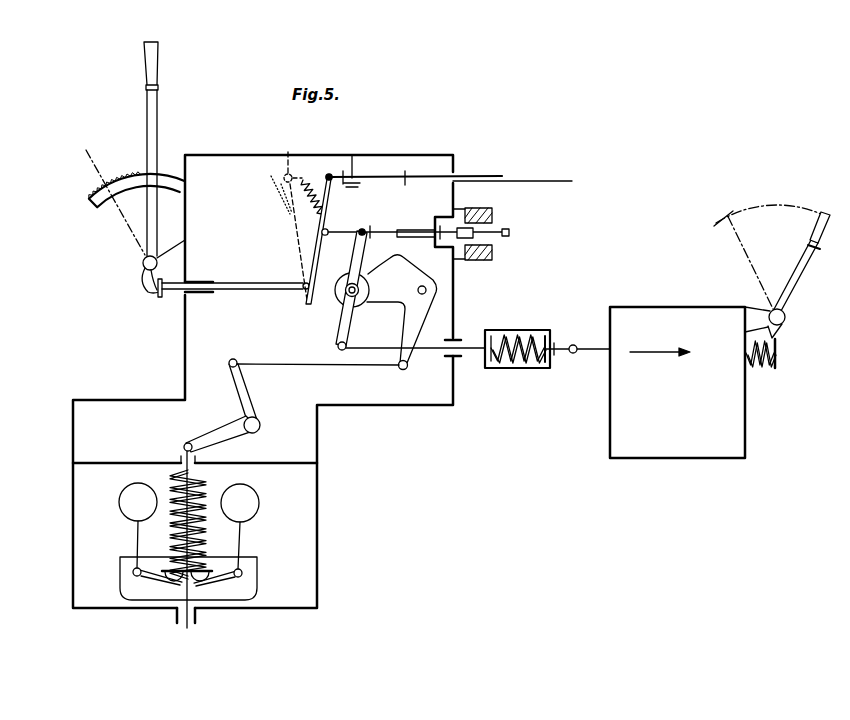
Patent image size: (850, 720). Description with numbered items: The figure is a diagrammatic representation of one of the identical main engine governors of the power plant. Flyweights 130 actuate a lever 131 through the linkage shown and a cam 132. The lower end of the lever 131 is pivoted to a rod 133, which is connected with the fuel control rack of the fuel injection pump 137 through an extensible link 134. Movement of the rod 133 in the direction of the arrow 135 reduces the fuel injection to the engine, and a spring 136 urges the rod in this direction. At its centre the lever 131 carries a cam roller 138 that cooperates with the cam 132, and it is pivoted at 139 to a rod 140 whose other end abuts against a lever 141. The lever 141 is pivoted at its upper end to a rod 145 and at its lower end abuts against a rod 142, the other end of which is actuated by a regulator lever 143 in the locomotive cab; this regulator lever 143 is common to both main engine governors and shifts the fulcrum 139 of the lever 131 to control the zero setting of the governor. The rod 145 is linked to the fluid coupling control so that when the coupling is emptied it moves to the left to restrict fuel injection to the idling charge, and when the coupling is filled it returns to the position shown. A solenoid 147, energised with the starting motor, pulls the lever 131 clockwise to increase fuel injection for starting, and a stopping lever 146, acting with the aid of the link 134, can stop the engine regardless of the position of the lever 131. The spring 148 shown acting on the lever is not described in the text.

The flyweights 130 is at (119, 493).
The lever 131 is at (337, 333).
The cam 132 is at (385, 298).
The rod 133 is at (474, 346).
The extensible link 134 is at (514, 329).
The arrow 135 is at (650, 354).
The spring 136 is at (766, 371).
The fuel injection pump 137 is at (677, 382).
The cam roller 138 is at (338, 298).
The pivot (fulcrum) 139 is at (363, 228).
The rod 140 is at (340, 229).
The lever 141 is at (321, 238).
The rod 142 is at (245, 282).
The regulator lever 143 is at (154, 78).
The rod 145 is at (410, 184).
The stopping lever 146 is at (800, 262).
The solenoid 147 is at (480, 208).
The spring 148 is at (303, 178).